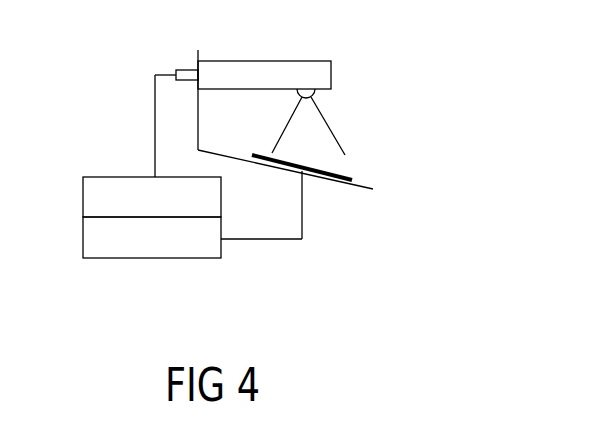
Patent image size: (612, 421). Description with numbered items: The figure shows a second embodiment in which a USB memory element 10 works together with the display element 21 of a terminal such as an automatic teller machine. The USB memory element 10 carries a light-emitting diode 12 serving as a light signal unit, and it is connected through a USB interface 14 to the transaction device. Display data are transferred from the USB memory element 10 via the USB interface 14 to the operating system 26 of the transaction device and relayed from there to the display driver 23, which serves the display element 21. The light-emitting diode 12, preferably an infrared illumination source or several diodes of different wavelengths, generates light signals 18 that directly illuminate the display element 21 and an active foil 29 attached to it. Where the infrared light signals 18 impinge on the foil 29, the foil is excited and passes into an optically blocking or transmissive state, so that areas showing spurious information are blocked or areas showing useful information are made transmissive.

The USB memory element 10 is at (313, 63).
The light-emitting diode 12 is at (315, 95).
The USB interface 14 is at (188, 71).
The light signals 18 is at (299, 132).
The display element 21 is at (357, 184).
The display driver 23 is at (152, 237).
The operating system 26 is at (152, 197).
The active foil 29 is at (310, 169).